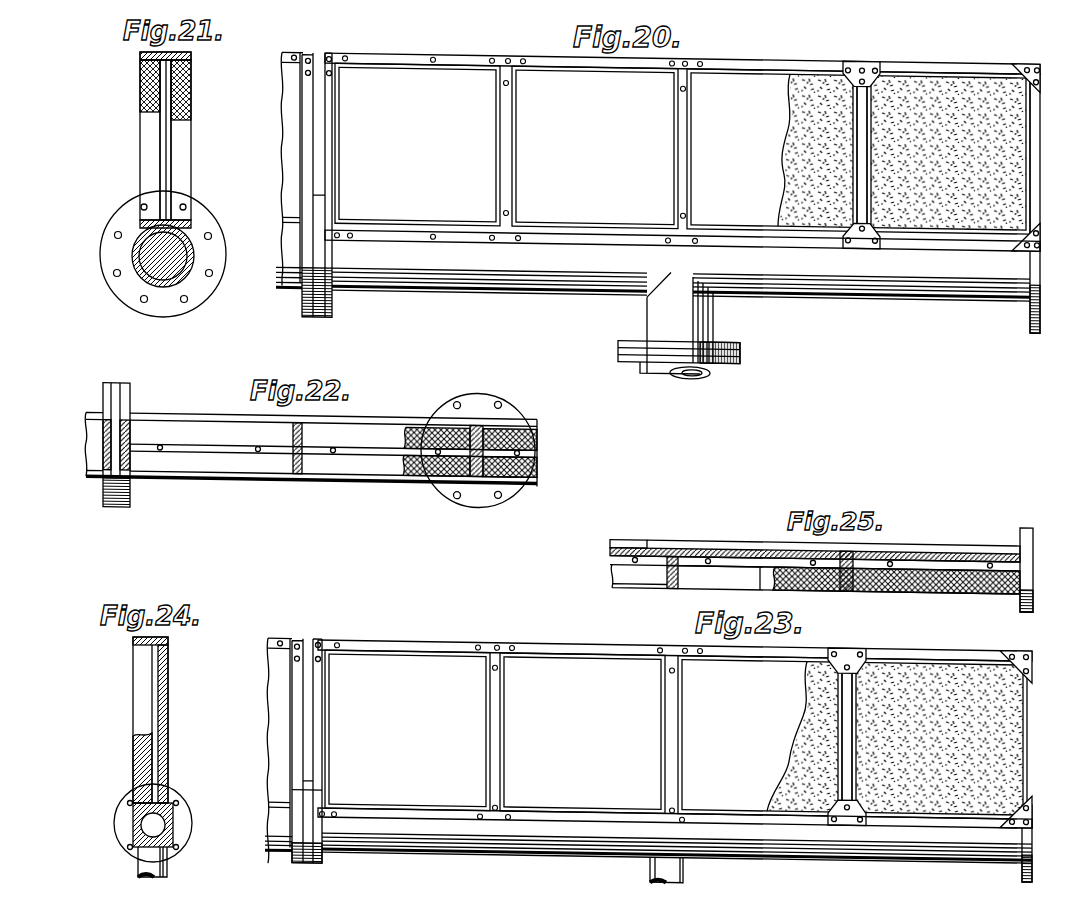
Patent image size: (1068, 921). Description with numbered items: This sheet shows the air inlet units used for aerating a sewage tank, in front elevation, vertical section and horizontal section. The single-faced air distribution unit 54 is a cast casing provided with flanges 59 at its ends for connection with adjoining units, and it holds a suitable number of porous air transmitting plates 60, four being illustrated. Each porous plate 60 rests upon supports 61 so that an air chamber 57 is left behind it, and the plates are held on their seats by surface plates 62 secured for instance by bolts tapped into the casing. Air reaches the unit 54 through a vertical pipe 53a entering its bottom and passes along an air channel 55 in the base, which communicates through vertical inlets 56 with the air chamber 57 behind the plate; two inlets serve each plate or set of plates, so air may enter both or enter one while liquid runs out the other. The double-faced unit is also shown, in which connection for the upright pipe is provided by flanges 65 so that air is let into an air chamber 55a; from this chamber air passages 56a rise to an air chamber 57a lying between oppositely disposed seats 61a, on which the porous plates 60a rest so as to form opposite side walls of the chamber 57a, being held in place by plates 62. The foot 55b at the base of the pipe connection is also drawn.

In FIG. 24, the vertical pipe 53a is at (170, 866).
In FIG. 23, the vertical pipe 53a is at (652, 862).
In FIG. 20, the air distribution unit 54 is at (681, 284).
In FIG. 23, the air distribution unit 54 is at (488, 856).
In FIG. 24, the air channel 55 is at (178, 820).
In FIG. 21, the air chamber 55a is at (186, 257).
In FIG. 20, the foot 55b is at (712, 364).
In FIG. 25, the vertical inlets 56 is at (1003, 552).
In FIG. 21, the air passages 56a is at (193, 216).
In FIG. 22, the air passages 56a is at (311, 447).
In FIG. 25, the air chamber 57 is at (955, 530).
In FIG. 21, the air chamber 57a is at (165, 147).
In FIG. 20, the flanges 59 is at (671, 193).
In FIG. 23, the flanges 59 is at (1022, 862).
In FIG. 20, the porous air transmitting plates 60 is at (948, 153).
In FIG. 23, the porous air transmitting plates 60 is at (947, 662).
In FIG. 21, the porous plates 60a is at (140, 78).
In FIG. 25, the supports 61 is at (865, 552).
In FIG. 21, the oppositely disposed seats 61a is at (191, 60).
In FIG. 20, the surface plates 62 is at (880, 260).
In FIG. 23, the surface plates 62 is at (845, 855).
In FIG. 20, the flanges 65 is at (752, 318).